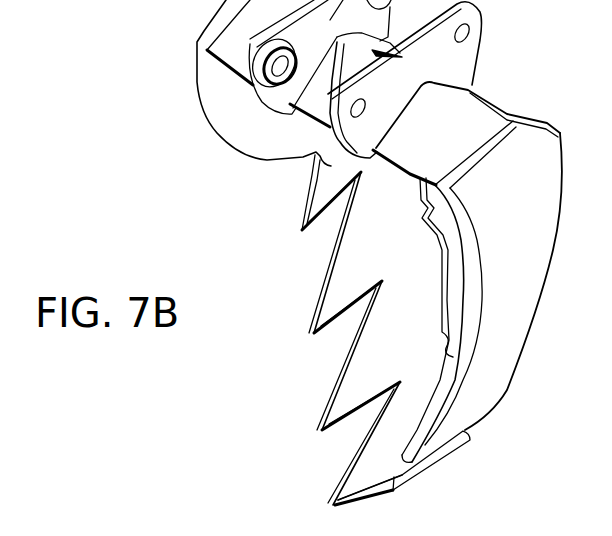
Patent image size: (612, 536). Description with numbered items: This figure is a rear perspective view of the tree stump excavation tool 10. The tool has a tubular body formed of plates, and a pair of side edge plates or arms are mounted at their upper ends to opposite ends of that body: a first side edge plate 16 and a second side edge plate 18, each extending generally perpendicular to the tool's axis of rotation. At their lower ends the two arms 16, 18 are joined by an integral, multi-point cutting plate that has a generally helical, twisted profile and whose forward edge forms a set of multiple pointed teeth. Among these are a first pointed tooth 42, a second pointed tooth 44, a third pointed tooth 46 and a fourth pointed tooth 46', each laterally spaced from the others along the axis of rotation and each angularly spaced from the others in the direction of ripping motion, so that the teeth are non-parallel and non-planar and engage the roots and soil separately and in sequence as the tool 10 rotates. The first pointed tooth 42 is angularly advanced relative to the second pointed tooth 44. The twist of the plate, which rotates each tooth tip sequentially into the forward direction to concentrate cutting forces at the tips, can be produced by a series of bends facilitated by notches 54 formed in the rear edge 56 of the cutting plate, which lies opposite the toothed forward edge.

The tree stump excavation tool 10 is at (132, 162).
The first side edge plate 16 is at (254, 133).
The second side edge plate 18 is at (526, 218).
The first pointed tooth 42 is at (378, 463).
The second pointed tooth 44 is at (360, 385).
The third pointed tooth 46 is at (316, 355).
The fourth pointed tooth 46' is at (297, 252).
The notches 54 is at (412, 256).
The rear edge 56 is at (412, 207).